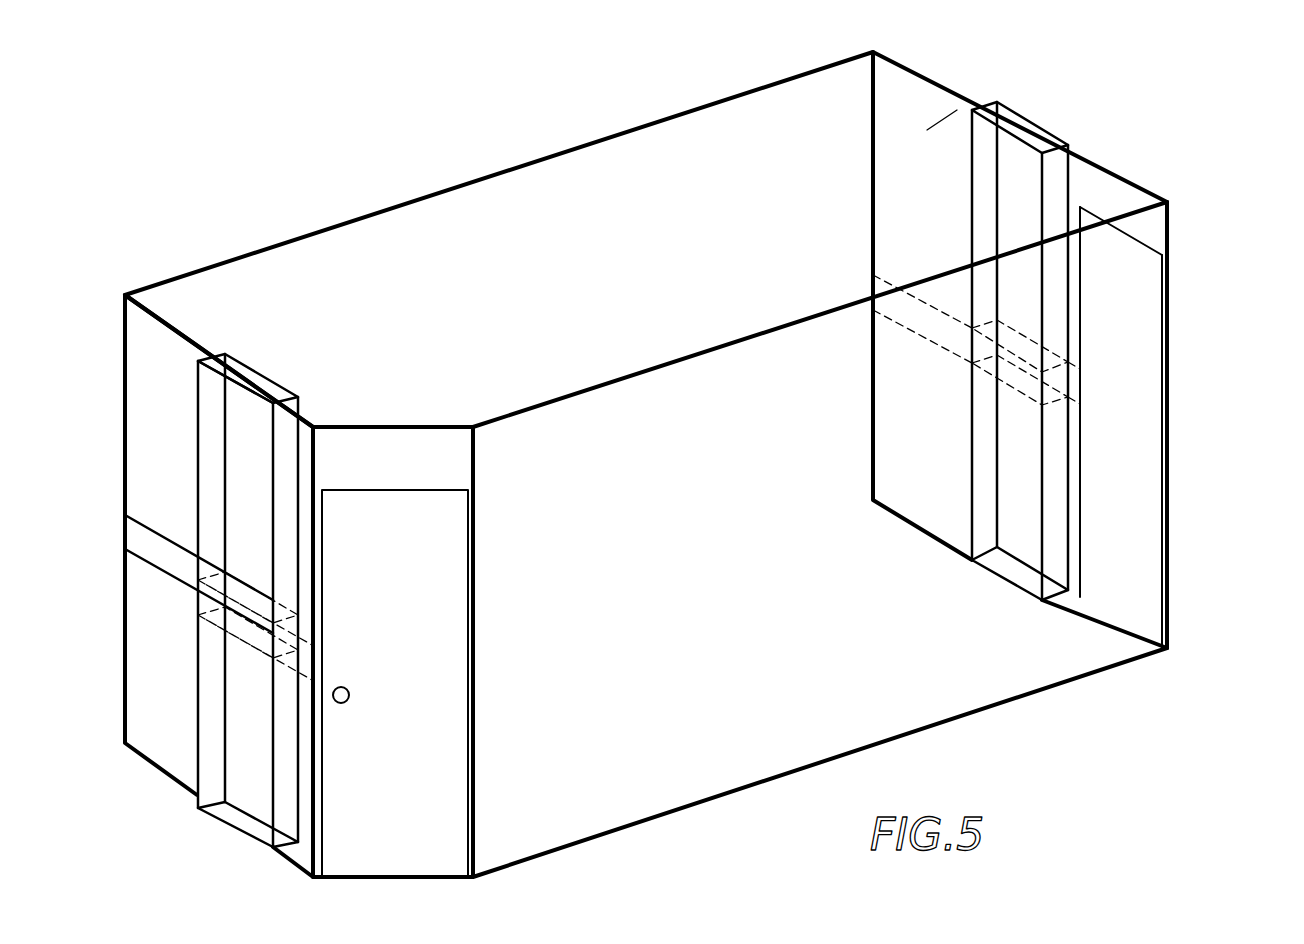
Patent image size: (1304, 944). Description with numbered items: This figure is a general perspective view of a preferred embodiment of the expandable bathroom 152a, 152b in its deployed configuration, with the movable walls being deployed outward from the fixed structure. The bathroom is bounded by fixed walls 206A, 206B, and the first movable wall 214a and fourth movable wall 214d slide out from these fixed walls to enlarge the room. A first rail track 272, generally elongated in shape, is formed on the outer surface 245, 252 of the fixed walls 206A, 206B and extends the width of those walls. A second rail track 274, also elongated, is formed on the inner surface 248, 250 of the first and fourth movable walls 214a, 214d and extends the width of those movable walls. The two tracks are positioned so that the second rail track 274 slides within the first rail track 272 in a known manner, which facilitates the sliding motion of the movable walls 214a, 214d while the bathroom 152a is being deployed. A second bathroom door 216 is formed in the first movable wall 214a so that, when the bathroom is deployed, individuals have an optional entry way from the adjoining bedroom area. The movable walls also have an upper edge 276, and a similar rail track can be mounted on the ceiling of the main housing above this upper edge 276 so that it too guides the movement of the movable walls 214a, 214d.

The expandable bathroom 152a is at (657, 459).
The expandable bathroom 152b is at (657, 459).
The fixed wall 206A is at (160, 675).
The fixed wall 206B is at (910, 72).
The outer surface 252 is at (160, 427).
The first rail track 272 is at (142, 540).
The second rail track 274 is at (297, 647).
The upper edge 276 is at (237, 600).
The inner surface 250 is at (253, 413).
The outer surface 245 is at (967, 107).
The inner surface 248 is at (1107, 204).
The second bathroom door 216 is at (1133, 233).
The first movable wall 214a is at (1168, 560).
The fourth movable wall 214d is at (297, 857).